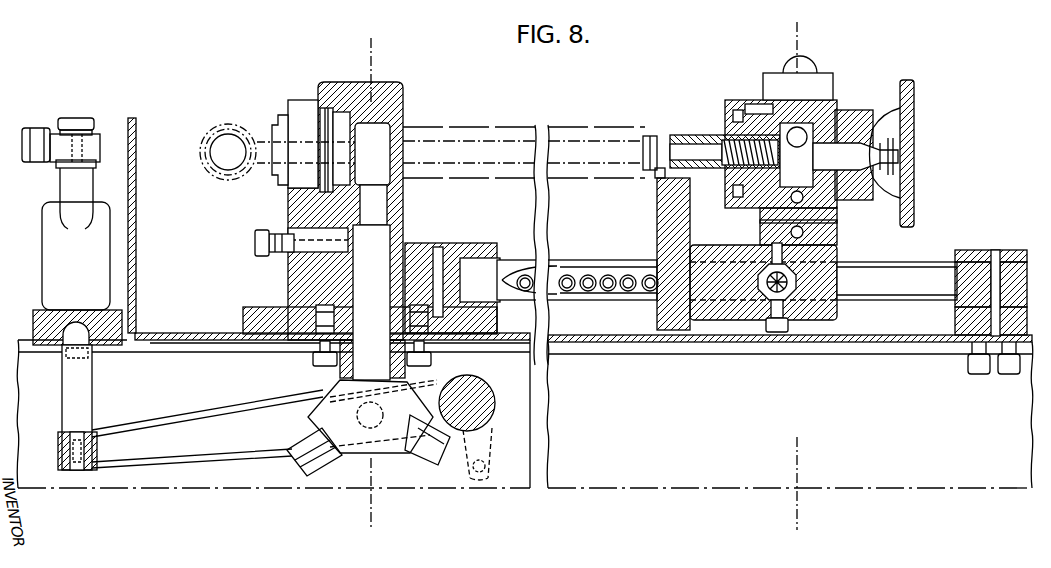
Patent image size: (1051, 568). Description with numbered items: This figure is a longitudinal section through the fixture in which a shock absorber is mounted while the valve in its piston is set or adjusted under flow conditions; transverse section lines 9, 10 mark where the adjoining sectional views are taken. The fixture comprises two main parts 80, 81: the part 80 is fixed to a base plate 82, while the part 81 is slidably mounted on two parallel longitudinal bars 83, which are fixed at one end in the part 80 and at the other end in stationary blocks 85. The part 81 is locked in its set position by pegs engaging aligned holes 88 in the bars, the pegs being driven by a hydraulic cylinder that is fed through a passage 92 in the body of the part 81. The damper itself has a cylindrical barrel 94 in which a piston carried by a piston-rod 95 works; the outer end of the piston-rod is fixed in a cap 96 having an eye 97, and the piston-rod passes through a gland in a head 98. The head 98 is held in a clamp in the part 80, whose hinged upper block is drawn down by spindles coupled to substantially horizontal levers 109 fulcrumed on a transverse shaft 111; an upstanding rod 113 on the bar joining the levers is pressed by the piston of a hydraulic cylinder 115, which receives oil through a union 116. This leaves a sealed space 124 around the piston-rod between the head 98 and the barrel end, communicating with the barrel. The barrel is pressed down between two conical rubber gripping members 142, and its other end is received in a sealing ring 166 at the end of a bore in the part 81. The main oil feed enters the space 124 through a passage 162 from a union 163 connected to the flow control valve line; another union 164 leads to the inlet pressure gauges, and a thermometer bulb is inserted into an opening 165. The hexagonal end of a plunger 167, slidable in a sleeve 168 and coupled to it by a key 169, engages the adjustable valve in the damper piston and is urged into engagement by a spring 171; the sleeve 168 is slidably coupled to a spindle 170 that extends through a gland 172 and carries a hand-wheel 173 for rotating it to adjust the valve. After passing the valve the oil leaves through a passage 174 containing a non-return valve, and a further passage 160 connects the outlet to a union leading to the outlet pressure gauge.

The section line 9- 9 is at (376, 515).
The section line 10- 10 is at (796, 523).
The part 80 is at (466, 256).
The part 81 is at (834, 114).
The base plate 82 is at (690, 345).
The longitudinal bars 83 is at (512, 262).
The stationary blocks 85 is at (995, 250).
The aligned holes 88 is at (655, 268).
The passage 92 is at (780, 333).
The cylindrical barrel 94 is at (556, 140).
The piston-rod 95 is at (473, 148).
The cap 96 is at (246, 120).
The eye 97 is at (201, 150).
The head 98 is at (340, 132).
The levers 109 is at (228, 436).
The transverse shaft 111 is at (496, 400).
The upstanding rod 113 is at (82, 392).
The hydraulic cylinder 115 is at (72, 257).
The union 116 is at (36, 140).
The sealed space 124 is at (402, 122).
The conical rubber gripping members 142 is at (648, 135).
The further passage 160 is at (803, 197).
The passage 162 is at (386, 262).
The union 163 is at (305, 470).
The union 164 is at (442, 455).
The opening 165 is at (386, 445).
The sealing ring 166 is at (742, 195).
The plunger 167 is at (672, 166).
The sleeve 168 is at (716, 138).
The key 169 is at (694, 140).
The spindle 170 is at (783, 108).
The spring 171 is at (752, 108).
The gland 172 is at (914, 188).
The hand-wheel 173 is at (914, 96).
The passage 174 is at (816, 132).